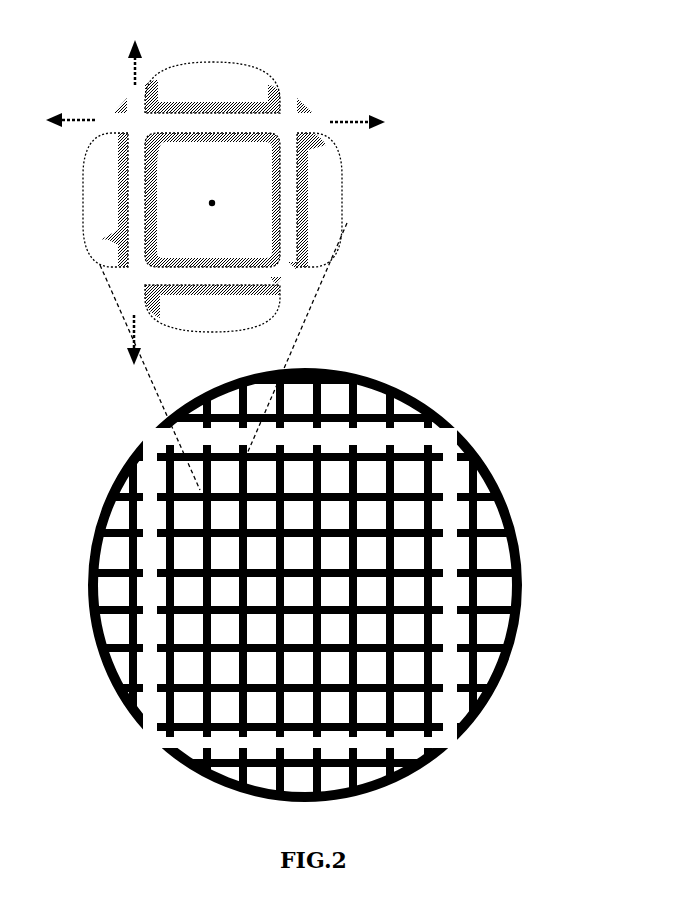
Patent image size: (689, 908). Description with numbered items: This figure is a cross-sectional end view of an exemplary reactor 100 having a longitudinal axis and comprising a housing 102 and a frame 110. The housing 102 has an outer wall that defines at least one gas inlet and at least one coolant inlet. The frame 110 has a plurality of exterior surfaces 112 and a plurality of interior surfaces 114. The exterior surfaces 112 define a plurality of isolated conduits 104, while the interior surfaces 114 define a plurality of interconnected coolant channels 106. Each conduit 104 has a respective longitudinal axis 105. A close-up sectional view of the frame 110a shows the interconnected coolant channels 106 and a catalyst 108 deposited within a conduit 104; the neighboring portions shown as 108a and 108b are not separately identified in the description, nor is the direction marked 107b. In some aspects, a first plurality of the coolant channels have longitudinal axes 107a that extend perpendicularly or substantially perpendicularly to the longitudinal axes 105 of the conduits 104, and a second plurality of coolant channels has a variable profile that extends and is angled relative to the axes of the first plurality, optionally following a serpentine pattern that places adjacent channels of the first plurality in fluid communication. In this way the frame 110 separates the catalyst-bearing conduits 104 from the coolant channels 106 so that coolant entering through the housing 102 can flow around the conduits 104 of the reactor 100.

The reactor 100 is at (322, 503).
The housing 102 is at (493, 695).
The isolated conduits 104 is at (375, 518).
The longitudinal axis of conduit 105 is at (252, 228).
The interconnected coolant channels 106 is at (288, 265).
The longitudinal axes of first plurality of coolant channels 107a is at (80, 115).
The vertical cutting direction 107b is at (145, 70).
The catalyst 108 is at (310, 147).
The adjacent die below 108a is at (150, 284).
The adjacent die left 108b is at (130, 245).
The frame 110 is at (392, 750).
The close-up sectional view of the frame 110a is at (118, 97).
The exterior surfaces 112 is at (155, 200).
The interior surfaces 114 is at (213, 127).